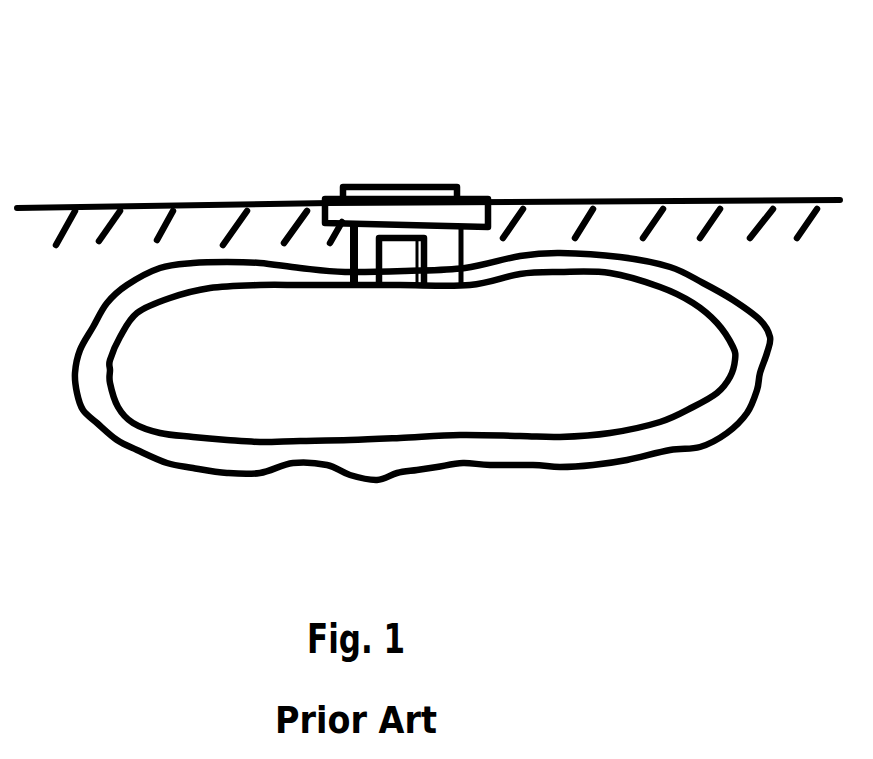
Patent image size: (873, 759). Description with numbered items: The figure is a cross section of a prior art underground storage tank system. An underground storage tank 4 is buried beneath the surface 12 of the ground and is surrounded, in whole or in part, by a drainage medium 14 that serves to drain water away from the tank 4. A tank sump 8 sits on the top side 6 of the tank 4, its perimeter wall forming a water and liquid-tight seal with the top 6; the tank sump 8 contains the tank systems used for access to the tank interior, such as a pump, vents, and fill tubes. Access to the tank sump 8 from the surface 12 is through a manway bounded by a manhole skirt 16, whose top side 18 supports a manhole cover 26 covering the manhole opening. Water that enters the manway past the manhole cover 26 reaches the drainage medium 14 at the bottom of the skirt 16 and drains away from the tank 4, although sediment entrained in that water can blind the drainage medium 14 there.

The underground storage tank 4 is at (290, 358).
The top side of tank 6 is at (593, 268).
The tank sump 8 is at (398, 263).
The surface of the ground 12 is at (210, 198).
The drainage medium 14 is at (508, 448).
The manhole skirt 16 is at (318, 197).
The top side of manhole skirt 18 is at (482, 195).
The manhole cover 26 is at (397, 187).